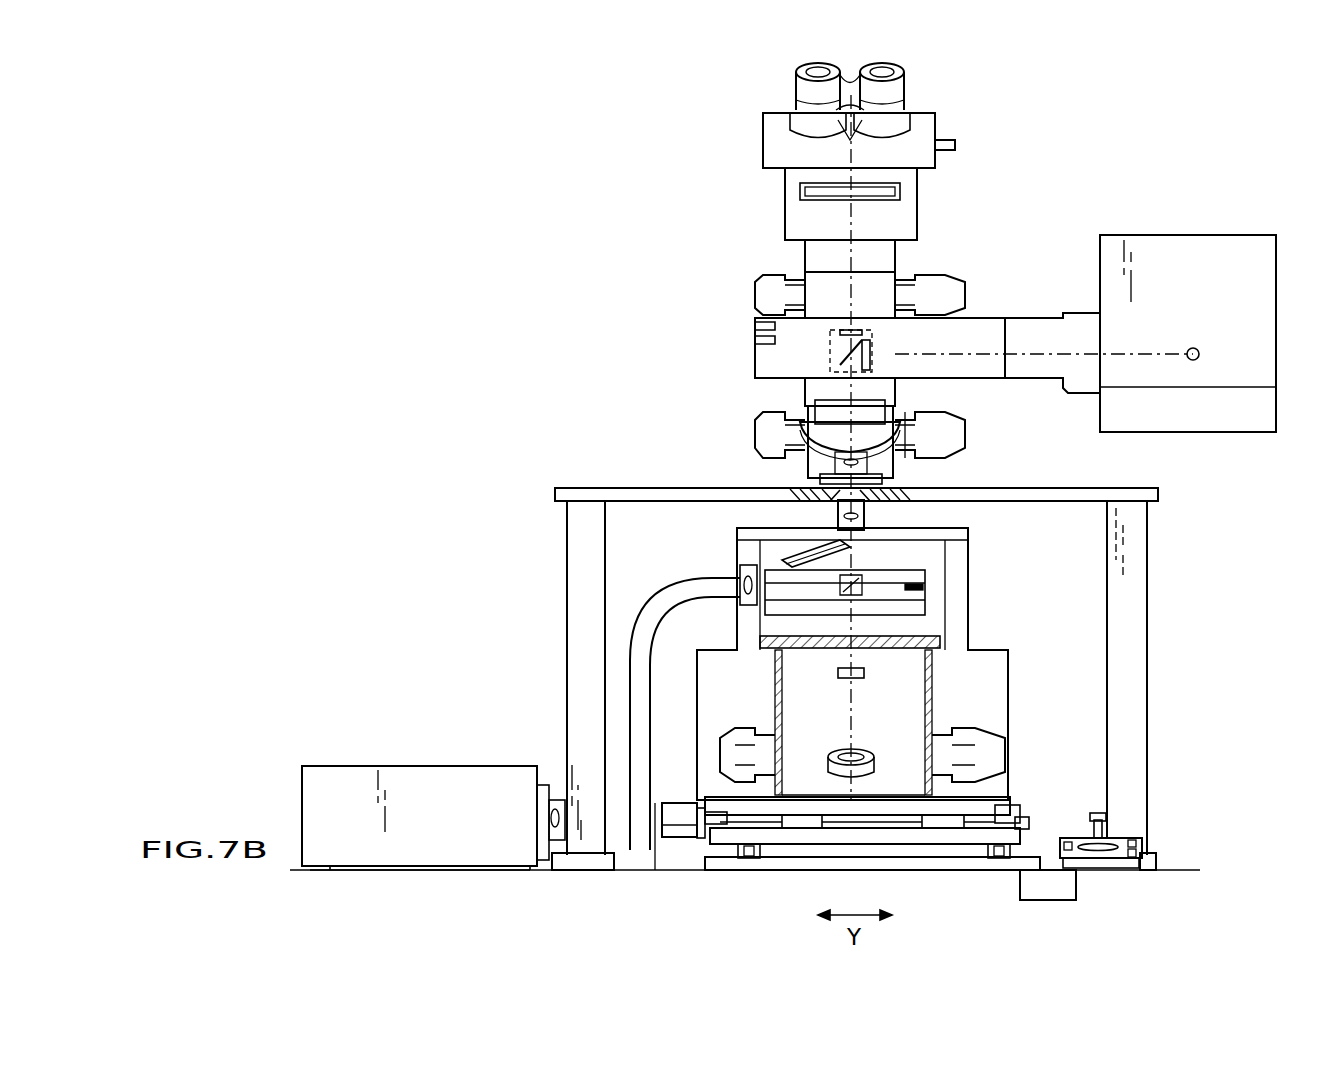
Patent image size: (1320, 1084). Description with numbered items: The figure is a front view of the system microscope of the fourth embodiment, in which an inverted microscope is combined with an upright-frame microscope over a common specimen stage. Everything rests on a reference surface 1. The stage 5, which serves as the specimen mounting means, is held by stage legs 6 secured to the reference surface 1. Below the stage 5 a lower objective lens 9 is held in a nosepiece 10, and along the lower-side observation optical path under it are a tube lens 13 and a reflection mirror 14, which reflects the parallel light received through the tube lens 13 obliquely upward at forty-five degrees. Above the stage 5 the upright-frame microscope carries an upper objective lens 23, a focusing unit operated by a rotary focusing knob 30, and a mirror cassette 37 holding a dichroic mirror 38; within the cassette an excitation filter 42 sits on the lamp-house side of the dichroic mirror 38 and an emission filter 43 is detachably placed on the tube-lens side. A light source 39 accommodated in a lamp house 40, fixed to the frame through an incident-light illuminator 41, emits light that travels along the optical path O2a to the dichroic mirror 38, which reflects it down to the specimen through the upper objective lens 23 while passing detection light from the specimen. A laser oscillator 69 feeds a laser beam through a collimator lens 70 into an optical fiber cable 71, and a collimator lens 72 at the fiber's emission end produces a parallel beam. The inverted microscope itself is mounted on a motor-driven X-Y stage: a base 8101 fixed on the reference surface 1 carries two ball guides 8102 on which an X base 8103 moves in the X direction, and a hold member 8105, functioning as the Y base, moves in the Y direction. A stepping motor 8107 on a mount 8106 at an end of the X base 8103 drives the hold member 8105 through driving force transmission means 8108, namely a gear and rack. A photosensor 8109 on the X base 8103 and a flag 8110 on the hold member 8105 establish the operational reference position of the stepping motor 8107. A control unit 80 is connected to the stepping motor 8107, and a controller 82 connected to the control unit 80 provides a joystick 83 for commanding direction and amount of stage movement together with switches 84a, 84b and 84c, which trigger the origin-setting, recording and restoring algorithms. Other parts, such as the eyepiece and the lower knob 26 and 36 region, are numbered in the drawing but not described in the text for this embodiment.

The reference surface 1 is at (650, 858).
The stage 5 is at (640, 488).
The stage legs 6 is at (1135, 698).
The lower objective lens 9 is at (866, 516).
The nosepiece 10 is at (790, 545).
The tube lens 13 is at (865, 678).
The reflection mirror 14 is at (868, 755).
The upper objective lens 23 is at (880, 468).
The focusing knob 26 is at (962, 436).
The rotary focusing knob 30 is at (952, 282).
The eyepiece 36 is at (905, 102).
The mirror cassette 37 is at (832, 350).
The dichroic mirror 38 is at (842, 358).
The light source 39 is at (1193, 348).
The lamp house 40 is at (1198, 240).
The incident-light illuminator 41 is at (1045, 320).
The excitation filter 42 is at (872, 350).
The emission filter 43 is at (855, 330).
The optical path O2a is at (945, 353).
The laser oscillator 69 is at (417, 766).
The collimator lens 70 is at (555, 800).
The optical fiber cable 71 is at (660, 578).
The collimator lens 72 is at (745, 563).
The control unit 80 is at (1050, 900).
The controller 82 is at (1105, 868).
The joystick 83 is at (1106, 817).
The switch 84a is at (1068, 840).
The switch 84b is at (1138, 844).
The switch 84c is at (1133, 860).
The base 8101 is at (842, 865).
The ball guides 8102 is at (750, 858).
The X base 8103 is at (935, 845).
The hold member 8105 is at (818, 795).
The mount 8106 is at (700, 838).
The stepping motor 8107 is at (672, 838).
The driving force transmission means 8108 is at (716, 825).
The photosensor 8109 is at (1028, 818).
The flag 8110 is at (1010, 810).